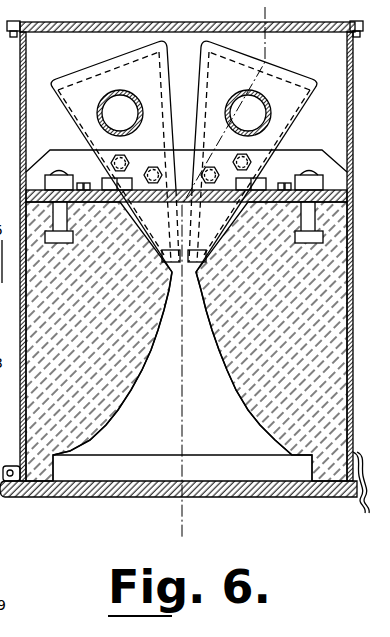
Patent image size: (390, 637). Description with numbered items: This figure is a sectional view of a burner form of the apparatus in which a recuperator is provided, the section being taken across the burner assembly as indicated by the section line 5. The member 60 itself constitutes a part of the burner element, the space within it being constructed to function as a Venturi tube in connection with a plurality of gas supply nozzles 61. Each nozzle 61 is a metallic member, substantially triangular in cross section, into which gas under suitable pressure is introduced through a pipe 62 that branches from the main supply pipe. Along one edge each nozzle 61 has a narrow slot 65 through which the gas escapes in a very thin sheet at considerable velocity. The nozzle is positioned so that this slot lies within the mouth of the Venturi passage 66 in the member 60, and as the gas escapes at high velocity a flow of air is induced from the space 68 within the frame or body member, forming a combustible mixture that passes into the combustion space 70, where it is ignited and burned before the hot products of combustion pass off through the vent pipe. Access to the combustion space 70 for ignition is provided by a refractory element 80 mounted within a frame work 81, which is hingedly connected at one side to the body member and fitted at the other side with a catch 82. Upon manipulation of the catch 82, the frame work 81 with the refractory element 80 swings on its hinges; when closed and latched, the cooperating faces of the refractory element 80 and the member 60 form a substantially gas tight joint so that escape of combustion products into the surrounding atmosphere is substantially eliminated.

The section line 5- 5 is at (272, 7).
The member 60 is at (305, 419).
The gas supply nozzle 61 is at (90, 117).
The pipe 62 is at (110, 92).
The narrow slot 65 is at (171, 300).
The Venturi passage 66 is at (205, 364).
The space 68 is at (183, 47).
The combustion space 70 is at (163, 442).
The refractory element 80 is at (108, 498).
The frame work 81 is at (10, 500).
The catch 82 is at (362, 503).